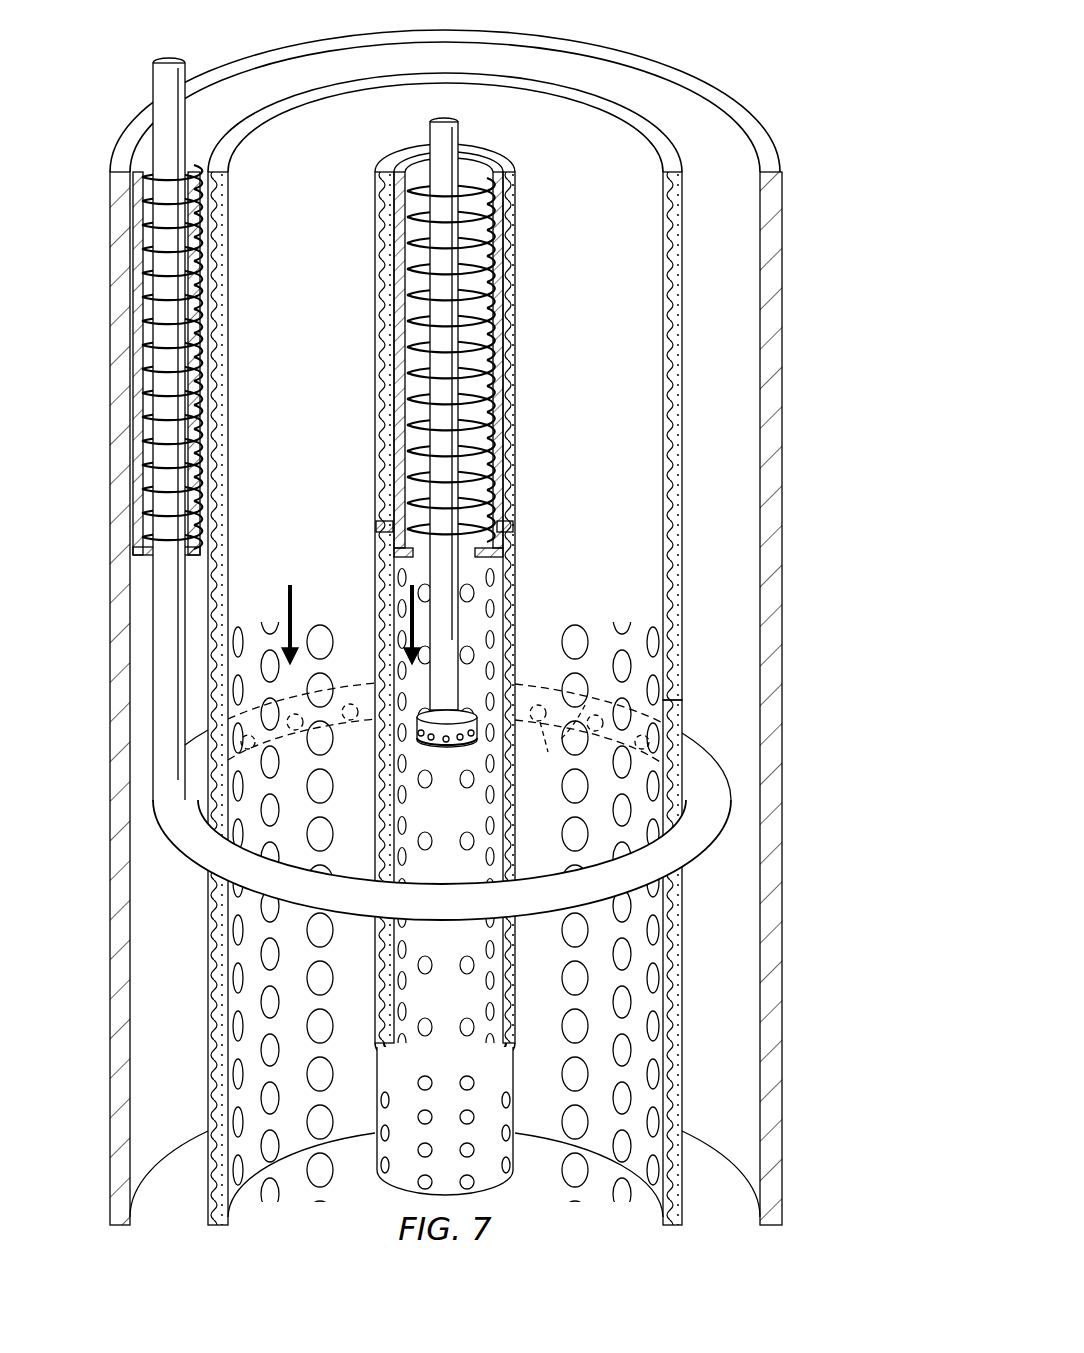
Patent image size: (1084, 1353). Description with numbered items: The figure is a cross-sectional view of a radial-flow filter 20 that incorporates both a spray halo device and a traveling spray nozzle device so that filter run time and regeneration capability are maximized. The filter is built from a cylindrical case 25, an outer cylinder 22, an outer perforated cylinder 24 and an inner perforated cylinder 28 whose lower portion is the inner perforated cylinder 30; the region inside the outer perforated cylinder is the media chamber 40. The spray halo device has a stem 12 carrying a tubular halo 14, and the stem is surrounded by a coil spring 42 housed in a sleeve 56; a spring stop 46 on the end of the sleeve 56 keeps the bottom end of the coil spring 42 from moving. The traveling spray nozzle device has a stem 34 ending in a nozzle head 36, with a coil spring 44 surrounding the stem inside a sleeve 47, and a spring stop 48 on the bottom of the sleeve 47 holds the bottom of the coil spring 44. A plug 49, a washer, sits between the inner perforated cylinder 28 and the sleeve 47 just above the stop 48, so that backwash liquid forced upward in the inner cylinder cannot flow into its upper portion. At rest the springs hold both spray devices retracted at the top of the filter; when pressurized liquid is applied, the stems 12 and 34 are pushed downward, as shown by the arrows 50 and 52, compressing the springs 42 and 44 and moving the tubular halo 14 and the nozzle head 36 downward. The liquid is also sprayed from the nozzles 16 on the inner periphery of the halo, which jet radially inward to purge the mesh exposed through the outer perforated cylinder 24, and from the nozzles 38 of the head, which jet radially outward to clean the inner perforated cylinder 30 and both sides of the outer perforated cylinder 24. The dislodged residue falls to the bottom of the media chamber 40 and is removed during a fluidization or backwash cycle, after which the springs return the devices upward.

The stem 12 is at (153, 92).
The tubular halo 14 is at (192, 845).
The nozzles 16 is at (445, 744).
The radial-flow filter 20 is at (721, 59).
The outer cylinder 22 is at (682, 440).
The outer perforated cylinder 24 is at (682, 975).
The cylindrical case 25 is at (782, 340).
The inner perforated cylinder 28 is at (513, 306).
The inner perforated cylinder 30 is at (508, 1160).
The stem 34 is at (460, 135).
The nozzle head 36 is at (472, 748).
The nozzles 38 is at (432, 748).
The media chamber 40 is at (292, 1145).
The coil spring 42 is at (110, 637).
The coil spring 44 is at (488, 235).
The spring stop 46 is at (200, 548).
The sleeve 47 is at (505, 350).
The spring stop 48 is at (495, 551).
The plug 49 is at (513, 527).
The arrow 50 is at (286, 624).
The arrow 52 is at (408, 622).
The sleeve 56 is at (143, 298).